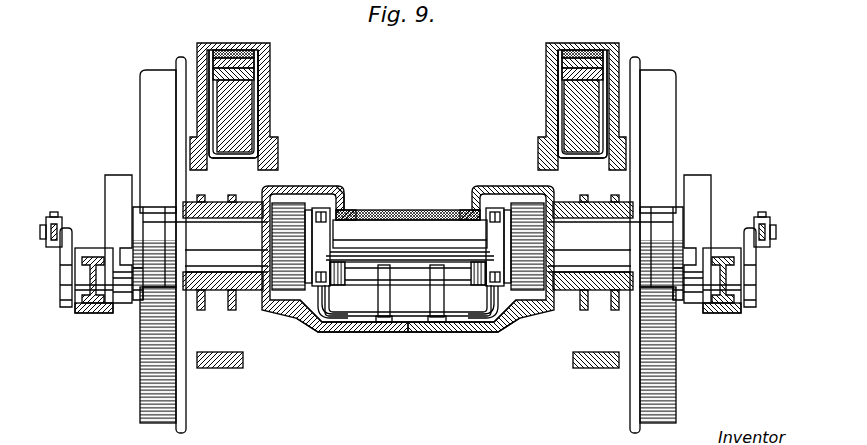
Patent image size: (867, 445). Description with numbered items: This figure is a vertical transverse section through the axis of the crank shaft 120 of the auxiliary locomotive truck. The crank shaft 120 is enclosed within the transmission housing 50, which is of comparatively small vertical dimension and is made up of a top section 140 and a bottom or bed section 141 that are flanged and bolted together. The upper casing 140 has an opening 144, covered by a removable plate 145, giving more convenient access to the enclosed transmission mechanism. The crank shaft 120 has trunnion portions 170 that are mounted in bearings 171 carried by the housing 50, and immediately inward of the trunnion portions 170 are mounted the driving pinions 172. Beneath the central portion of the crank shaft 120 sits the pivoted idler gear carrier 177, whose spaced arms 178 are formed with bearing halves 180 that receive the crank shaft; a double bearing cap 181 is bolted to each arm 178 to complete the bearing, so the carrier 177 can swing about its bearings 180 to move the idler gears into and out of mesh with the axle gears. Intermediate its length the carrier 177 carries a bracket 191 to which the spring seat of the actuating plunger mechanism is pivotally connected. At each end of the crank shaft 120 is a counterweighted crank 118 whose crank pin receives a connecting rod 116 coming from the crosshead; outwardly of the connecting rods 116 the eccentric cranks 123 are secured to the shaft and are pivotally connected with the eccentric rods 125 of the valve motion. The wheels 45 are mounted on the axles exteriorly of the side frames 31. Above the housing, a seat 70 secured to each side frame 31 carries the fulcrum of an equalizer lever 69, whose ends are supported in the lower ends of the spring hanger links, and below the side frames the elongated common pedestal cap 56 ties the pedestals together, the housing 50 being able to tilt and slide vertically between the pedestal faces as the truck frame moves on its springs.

The side frame 31 is at (268, 92).
The wheel 45 is at (148, 120).
The transmission housing 50 is at (322, 330).
The common pedestal cap 56 is at (230, 368).
The equalizer lever 69 is at (240, 112).
The seat 70 is at (246, 48).
The connecting rod 116 is at (92, 304).
The counterweighted crank 118 is at (108, 192).
The crank shaft 120 is at (162, 292).
The eccentric crank 123 is at (66, 268).
The eccentric rod 125 is at (50, 246).
The top section 140 is at (340, 194).
The bed section 141 is at (420, 334).
The opening 144 is at (432, 216).
The removable plate 145 is at (404, 214).
The trunnion portion 170 is at (205, 210).
The bearing 171 is at (245, 272).
The driving pinion 172 is at (287, 214).
The idler gear carrier 177 is at (370, 318).
The carrier arm 178 is at (318, 304).
The bearing half 180 is at (336, 262).
The double bearing cap 181 is at (326, 214).
The bracket 191 is at (434, 294).